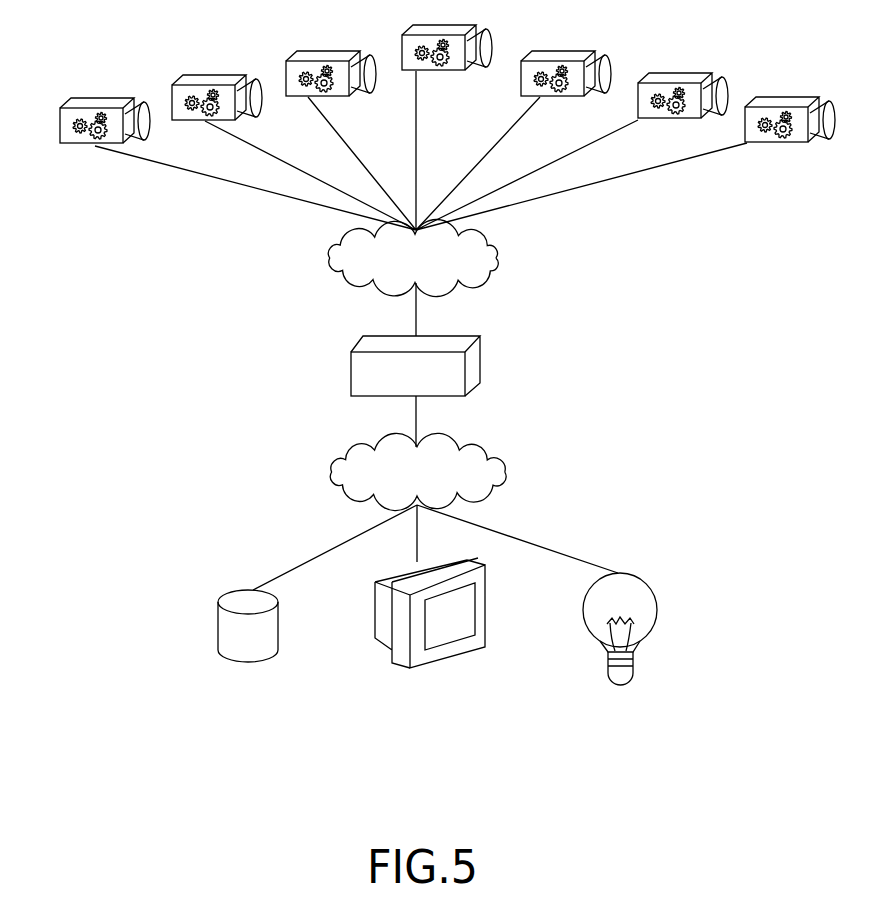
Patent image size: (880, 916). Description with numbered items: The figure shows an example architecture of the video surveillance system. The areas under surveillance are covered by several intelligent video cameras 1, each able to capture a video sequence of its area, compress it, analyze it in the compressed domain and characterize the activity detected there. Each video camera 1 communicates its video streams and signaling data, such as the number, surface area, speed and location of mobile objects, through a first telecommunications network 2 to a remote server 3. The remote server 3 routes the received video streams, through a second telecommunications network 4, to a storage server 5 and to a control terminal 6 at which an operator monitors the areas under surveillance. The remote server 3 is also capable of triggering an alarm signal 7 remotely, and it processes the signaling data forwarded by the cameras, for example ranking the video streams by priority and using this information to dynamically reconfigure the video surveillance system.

The video camera 1 is at (60, 128).
The first telecommunications network 2 is at (505, 257).
The remote server 3 is at (350, 380).
The second telecommunications network 4 is at (332, 472).
The storage server 5 is at (218, 628).
The control terminal 6 is at (410, 668).
The alarm signal 7 is at (658, 608).